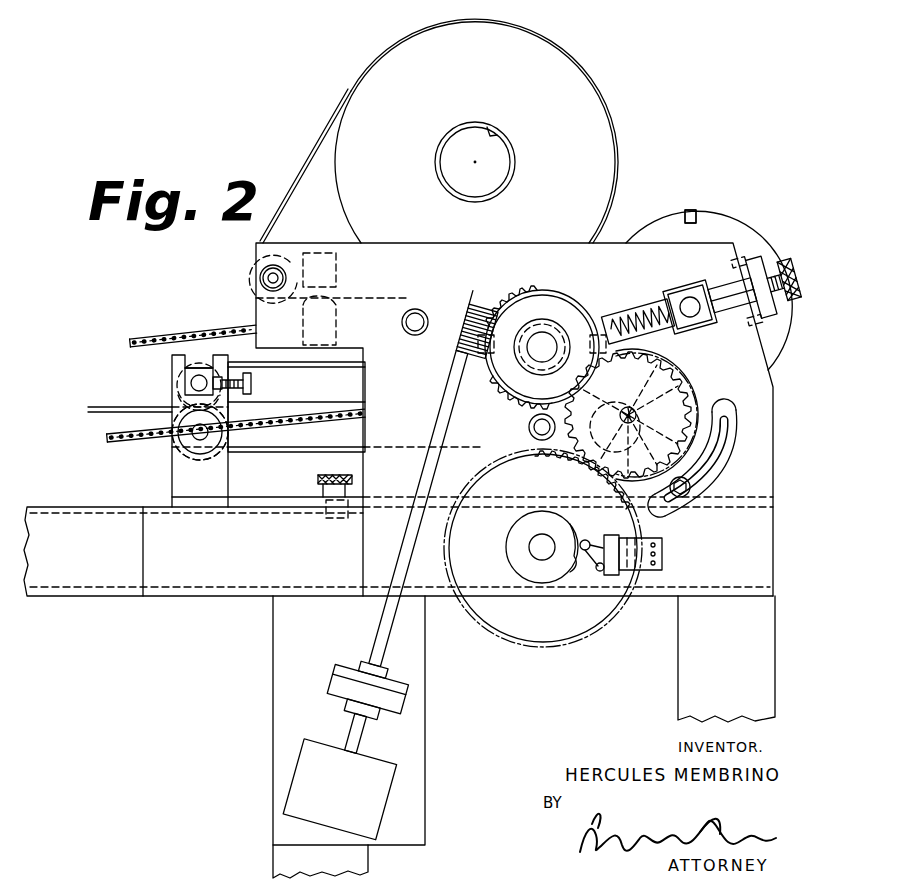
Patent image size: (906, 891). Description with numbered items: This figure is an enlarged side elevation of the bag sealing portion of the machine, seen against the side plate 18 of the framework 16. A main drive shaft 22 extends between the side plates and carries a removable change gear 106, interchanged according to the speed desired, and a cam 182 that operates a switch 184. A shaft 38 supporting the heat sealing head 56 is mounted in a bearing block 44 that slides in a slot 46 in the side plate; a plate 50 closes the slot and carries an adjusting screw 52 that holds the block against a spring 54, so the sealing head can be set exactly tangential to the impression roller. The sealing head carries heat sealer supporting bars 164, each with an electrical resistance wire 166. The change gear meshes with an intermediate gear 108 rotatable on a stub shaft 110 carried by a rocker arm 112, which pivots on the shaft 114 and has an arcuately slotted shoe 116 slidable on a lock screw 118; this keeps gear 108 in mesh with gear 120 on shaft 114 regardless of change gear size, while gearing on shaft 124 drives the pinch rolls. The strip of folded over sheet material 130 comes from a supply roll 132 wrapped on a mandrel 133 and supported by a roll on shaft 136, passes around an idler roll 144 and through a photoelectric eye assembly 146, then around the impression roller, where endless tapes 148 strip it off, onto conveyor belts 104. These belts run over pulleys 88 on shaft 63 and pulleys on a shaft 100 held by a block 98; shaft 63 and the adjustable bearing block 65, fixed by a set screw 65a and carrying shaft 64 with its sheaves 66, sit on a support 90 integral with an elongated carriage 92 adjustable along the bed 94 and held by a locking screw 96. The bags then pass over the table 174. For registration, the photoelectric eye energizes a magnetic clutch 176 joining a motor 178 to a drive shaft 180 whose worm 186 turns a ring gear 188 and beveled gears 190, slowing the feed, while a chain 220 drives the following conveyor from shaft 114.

The framework 16 is at (772, 648).
The side plate 18 is at (616, 266).
The main drive shaft 22 is at (543, 552).
The shaft 38 is at (690, 298).
The bearing block 44 is at (697, 330).
The slot 46 is at (733, 318).
The plate 50 is at (760, 262).
The adjusting screw 52 is at (787, 270).
The spring 54 is at (636, 320).
The heat sealing head 56 is at (727, 213).
The shaft 63 is at (200, 442).
The shaft 64 is at (199, 380).
The adjustable bearing block 65 is at (190, 382).
The set screw 65a is at (253, 381).
The sheaves 66 is at (182, 398).
The pulleys 88 is at (178, 448).
The support 90 is at (170, 484).
The elongated carriage 92 is at (258, 478).
The bed 94 is at (200, 560).
The locking screw 96 is at (320, 478).
The block 98 is at (602, 472).
The shaft 100 is at (560, 460).
The conveyor belt 104 is at (308, 420).
The change gear 106 is at (580, 612).
The intermediate gear 108 is at (629, 418).
The stub shaft 110 is at (634, 412).
The rocker arm 112 is at (692, 404).
The shaft 114 is at (540, 350).
The arcuately slotted shoe 116 is at (722, 452).
The lock screw 118 is at (692, 485).
The gear 120 is at (628, 415).
The shaft 124 is at (534, 427).
The strip of folded over sheet material 130 is at (322, 148).
The supply roll 132 is at (578, 62).
The mandrel 133 is at (497, 136).
The shaft 136 is at (418, 312).
The idler roll 144 is at (258, 276).
The photoelectric eye assembly 146 is at (338, 264).
The endless tapes 148 is at (345, 360).
The heat sealer supporting bar 164 is at (684, 214).
The electrical resistance wire 166 is at (690, 208).
The table 174 is at (62, 560).
The magnetic clutch 176 is at (350, 672).
The motor 178 is at (372, 782).
The drive shaft 180 is at (452, 371).
The cam 182 is at (522, 544).
The switch 184 is at (610, 540).
The worm 186 is at (468, 300).
The ring gear 188 is at (511, 300).
The beveled gears 190 is at (574, 326).
The chain 220 is at (160, 340).